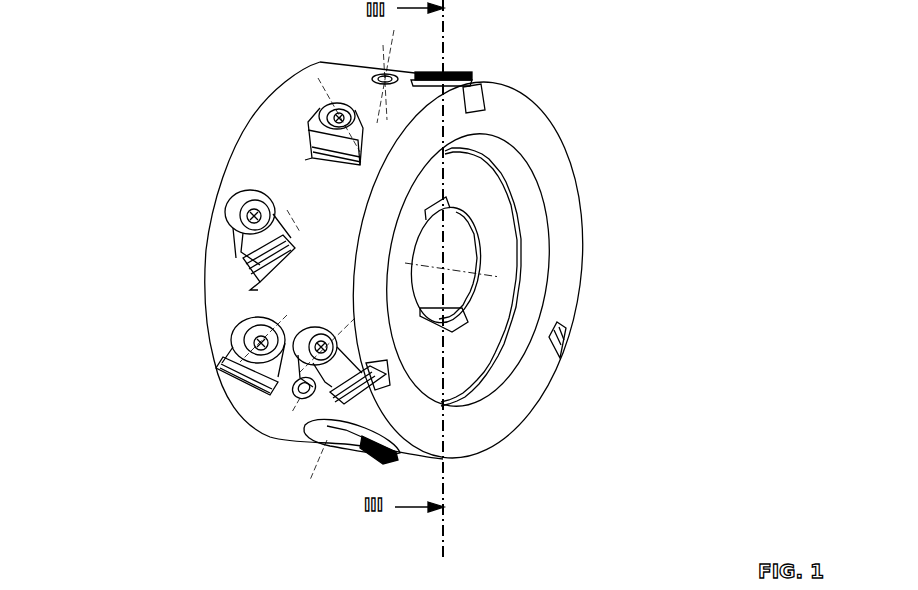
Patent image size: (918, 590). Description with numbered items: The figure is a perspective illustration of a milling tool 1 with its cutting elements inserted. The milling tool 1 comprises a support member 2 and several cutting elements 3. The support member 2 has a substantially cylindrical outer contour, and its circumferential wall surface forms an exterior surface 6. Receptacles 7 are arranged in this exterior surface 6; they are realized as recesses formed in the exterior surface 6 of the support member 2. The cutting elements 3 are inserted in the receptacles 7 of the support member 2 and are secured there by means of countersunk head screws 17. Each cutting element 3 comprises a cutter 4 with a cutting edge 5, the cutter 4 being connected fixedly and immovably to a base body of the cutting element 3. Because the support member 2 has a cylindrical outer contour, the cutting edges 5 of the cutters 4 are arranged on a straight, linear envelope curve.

The milling tool 1 is at (150, 62).
The support member 2 is at (266, 116).
The cutting element 3 is at (242, 248).
The cutter 4 is at (248, 272).
The cutting edge 5 is at (245, 265).
The exterior surface 6 is at (237, 182).
The receptacle 7 is at (206, 212).
The countersunk head screw 17 is at (252, 204).